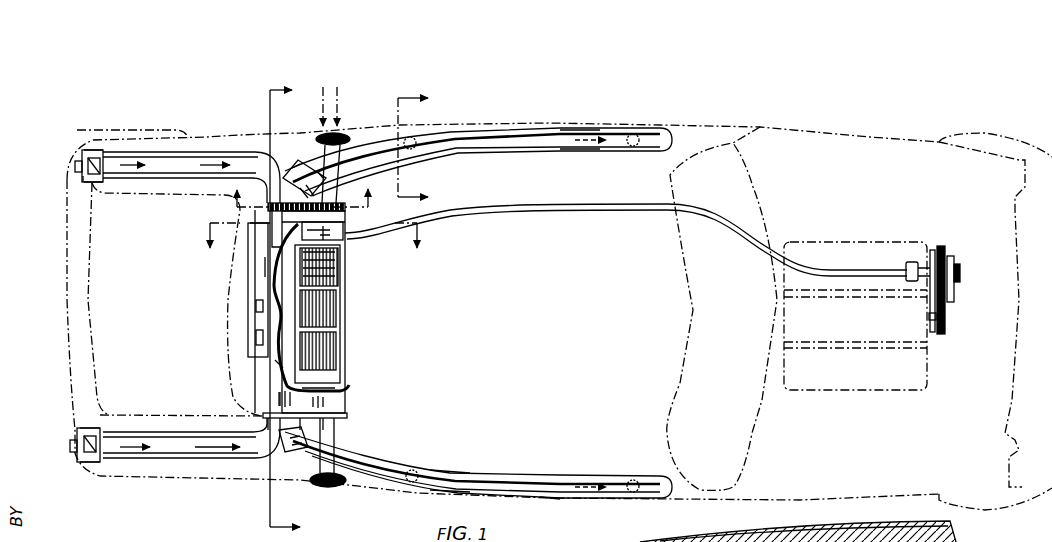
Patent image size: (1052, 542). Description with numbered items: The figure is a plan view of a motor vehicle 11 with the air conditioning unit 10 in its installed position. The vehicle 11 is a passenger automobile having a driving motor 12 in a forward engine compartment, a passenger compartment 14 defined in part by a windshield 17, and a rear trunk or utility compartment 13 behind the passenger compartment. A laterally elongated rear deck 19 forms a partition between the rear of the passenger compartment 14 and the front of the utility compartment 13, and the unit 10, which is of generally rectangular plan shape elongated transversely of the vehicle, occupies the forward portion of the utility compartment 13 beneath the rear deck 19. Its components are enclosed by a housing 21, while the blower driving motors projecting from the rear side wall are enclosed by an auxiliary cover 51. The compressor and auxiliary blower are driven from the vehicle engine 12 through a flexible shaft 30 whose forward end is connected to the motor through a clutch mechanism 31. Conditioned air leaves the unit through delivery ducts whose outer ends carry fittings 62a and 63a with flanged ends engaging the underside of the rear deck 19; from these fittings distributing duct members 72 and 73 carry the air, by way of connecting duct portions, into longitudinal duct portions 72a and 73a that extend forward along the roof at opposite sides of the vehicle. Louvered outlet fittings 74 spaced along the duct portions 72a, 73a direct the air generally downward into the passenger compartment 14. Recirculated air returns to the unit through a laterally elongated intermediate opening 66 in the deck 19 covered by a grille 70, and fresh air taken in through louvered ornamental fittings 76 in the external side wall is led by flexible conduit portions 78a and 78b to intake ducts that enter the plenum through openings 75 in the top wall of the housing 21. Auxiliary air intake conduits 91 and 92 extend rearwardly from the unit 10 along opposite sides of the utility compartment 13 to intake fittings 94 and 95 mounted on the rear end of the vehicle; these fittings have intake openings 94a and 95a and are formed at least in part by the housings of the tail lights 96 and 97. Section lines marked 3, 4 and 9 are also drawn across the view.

The section line 3- 3 is at (293, 309).
The section line 4- 4 is at (309, 246).
The section line 9- 9 is at (302, 196).
The air conditioning unit 10 is at (333, 400).
The motor vehicle 11 is at (763, 124).
The driving motor 12 is at (852, 385).
The utility compartment 13 is at (100, 322).
The passenger compartment 14 is at (552, 500).
The windshield 17 is at (765, 447).
The rear deck 19 is at (283, 368).
The housing 21 is at (258, 410).
The flexible shaft 30 is at (578, 195).
The clutch mechanism 31 is at (948, 256).
The auxiliary cover 51 is at (254, 334).
The fitting 62a is at (372, 160).
The fitting 63a is at (278, 427).
The intermediate opening 66 is at (338, 317).
The grille 70 is at (340, 340).
The distributing duct member 72 is at (498, 140).
The longitudinal duct portion 72a is at (558, 140).
The distributing duct member 73 is at (536, 480).
The longitudinal duct portion 73a is at (437, 474).
The louvered outlet fitting 74 is at (637, 131).
The openings 75 is at (332, 253).
The louvered ornamental fitting 76 is at (341, 131).
The flexible conduit portion 78a is at (340, 437).
The flexible conduit portion 78b is at (350, 196).
The auxiliary air intake conduit 91 is at (192, 462).
The auxiliary air intake conduit 92 is at (190, 160).
The intake fitting 94 is at (85, 464).
The intake opening 94a is at (80, 426).
The intake fitting 95 is at (95, 152).
The intake opening 95a is at (83, 180).
The tail light 96 is at (74, 458).
The tail light 97 is at (82, 170).